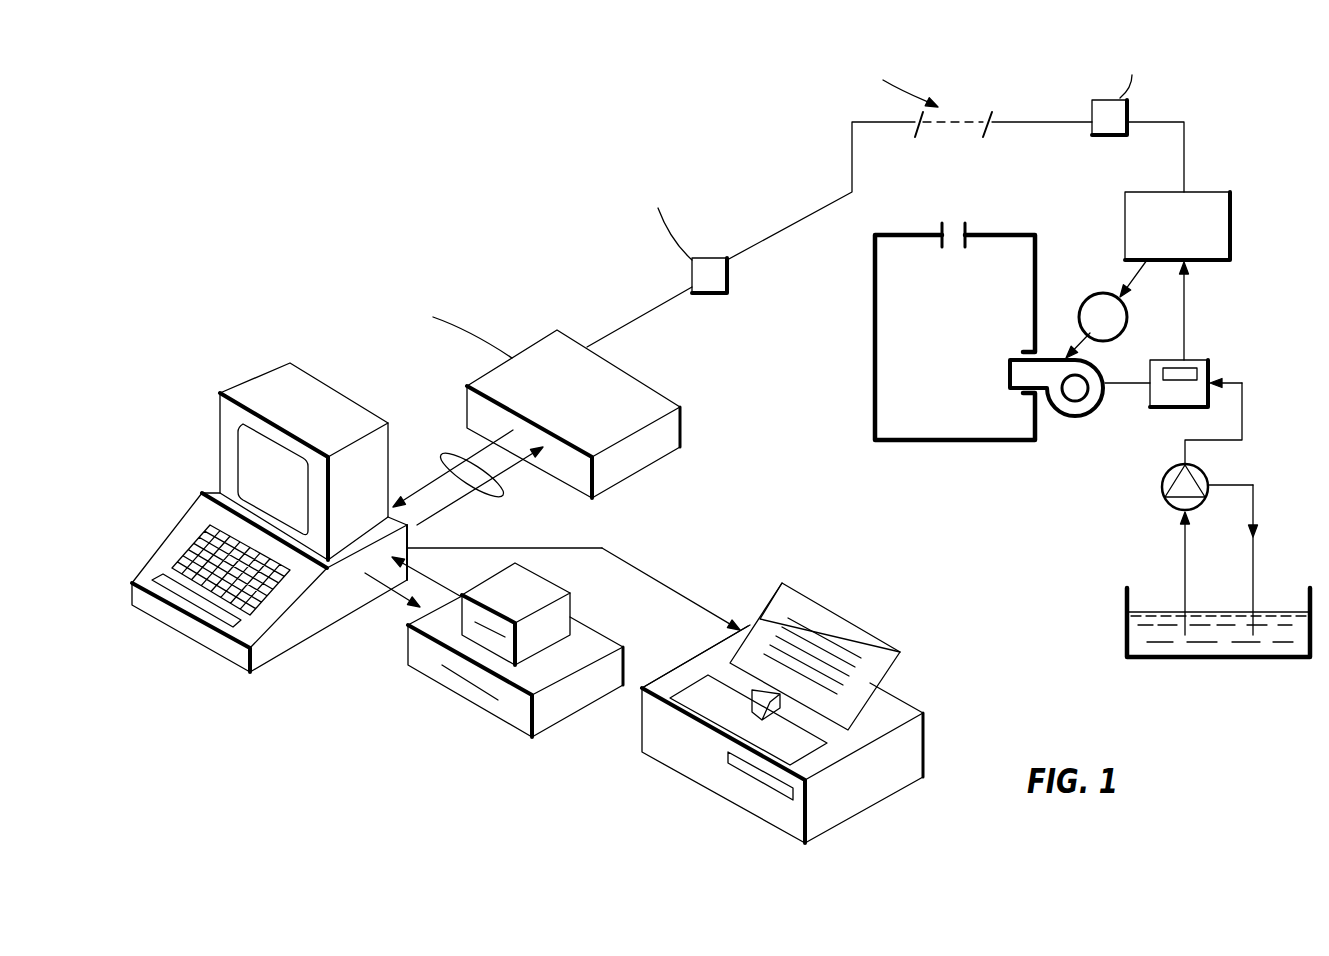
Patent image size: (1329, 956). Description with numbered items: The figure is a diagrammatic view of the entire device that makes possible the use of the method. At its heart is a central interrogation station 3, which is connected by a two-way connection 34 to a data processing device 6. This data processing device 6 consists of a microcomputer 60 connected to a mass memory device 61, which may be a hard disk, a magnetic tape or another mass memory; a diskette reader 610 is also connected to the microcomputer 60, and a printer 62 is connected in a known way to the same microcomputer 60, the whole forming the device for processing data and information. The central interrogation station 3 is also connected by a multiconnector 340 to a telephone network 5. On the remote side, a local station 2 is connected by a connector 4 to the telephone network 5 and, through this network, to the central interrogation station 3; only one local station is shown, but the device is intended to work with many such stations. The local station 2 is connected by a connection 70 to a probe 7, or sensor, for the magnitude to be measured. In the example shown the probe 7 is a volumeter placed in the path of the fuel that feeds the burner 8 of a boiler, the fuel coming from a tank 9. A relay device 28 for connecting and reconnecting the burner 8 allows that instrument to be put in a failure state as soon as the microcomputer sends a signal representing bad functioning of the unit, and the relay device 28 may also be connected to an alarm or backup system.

The local station 2 is at (1215, 197).
The central interrogation station 3 is at (668, 446).
The connector 4 is at (1092, 130).
The telephone network 5 is at (937, 138).
The data processing device 6 is at (269, 500).
The probe 7 is at (1208, 368).
The burner 8 is at (1050, 360).
The tank 9 is at (1138, 632).
The relay device 28 is at (1102, 298).
The two-way connection 34 is at (500, 493).
The microcomputer 60 is at (275, 378).
The mass memory device 61 is at (515, 657).
The diskette reader 610 is at (487, 620).
The printer 62 is at (907, 710).
The connection 70 is at (1185, 307).
The multiconnector 340 is at (708, 285).